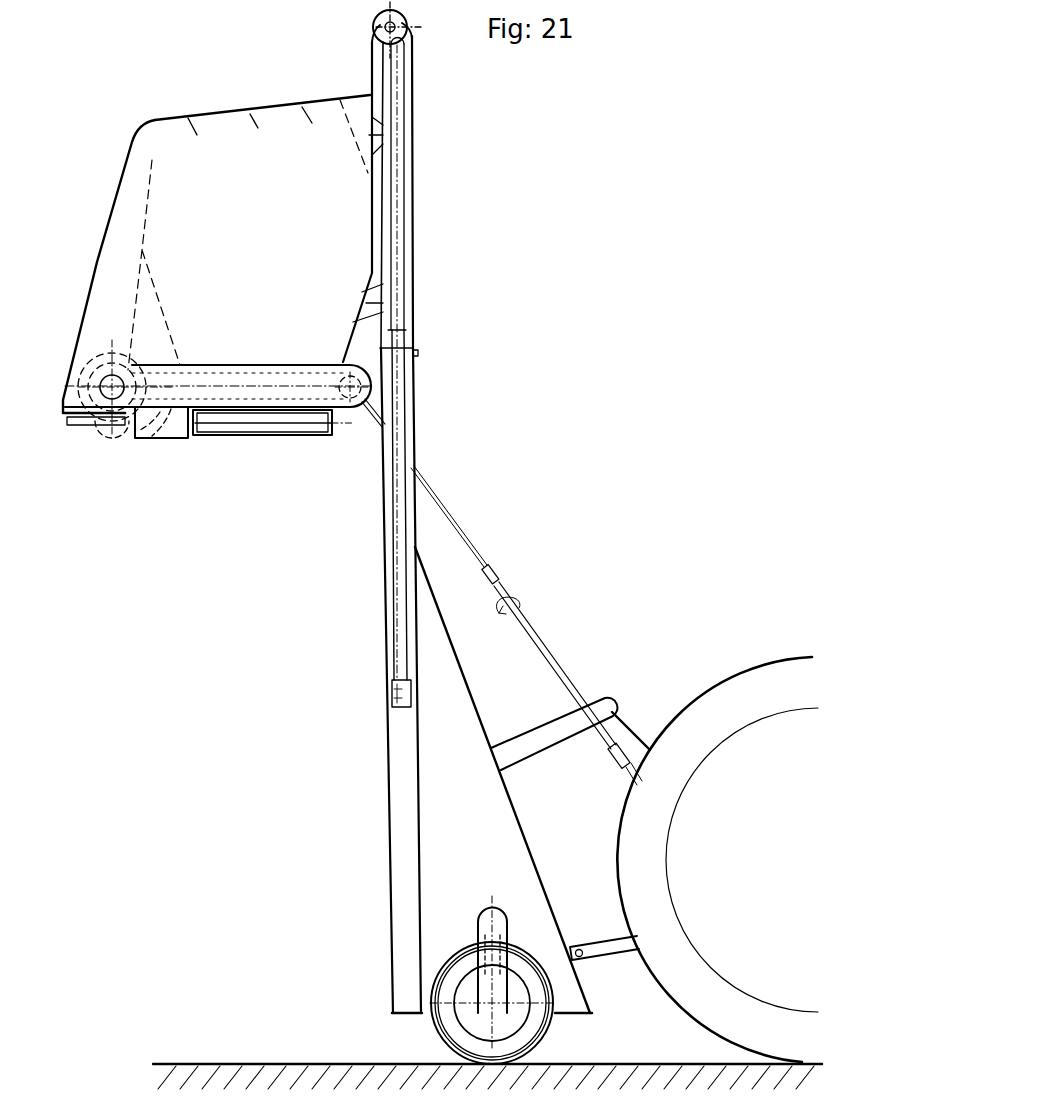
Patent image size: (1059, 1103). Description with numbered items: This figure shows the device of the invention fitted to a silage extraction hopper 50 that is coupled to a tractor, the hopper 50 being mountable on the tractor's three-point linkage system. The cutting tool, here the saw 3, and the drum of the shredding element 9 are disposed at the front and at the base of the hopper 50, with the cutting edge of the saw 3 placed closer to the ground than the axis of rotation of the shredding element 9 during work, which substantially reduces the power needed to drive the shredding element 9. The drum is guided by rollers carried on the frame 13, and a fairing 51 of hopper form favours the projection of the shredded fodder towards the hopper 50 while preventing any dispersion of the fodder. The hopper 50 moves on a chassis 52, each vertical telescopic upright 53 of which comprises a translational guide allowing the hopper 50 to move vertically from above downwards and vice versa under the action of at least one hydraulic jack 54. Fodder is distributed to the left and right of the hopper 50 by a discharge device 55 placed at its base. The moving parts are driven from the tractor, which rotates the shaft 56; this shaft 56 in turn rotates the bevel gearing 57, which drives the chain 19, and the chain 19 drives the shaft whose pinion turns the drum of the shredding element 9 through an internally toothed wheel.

The saw 3 is at (83, 428).
The shredding element 9 is at (105, 430).
The frame 13 is at (233, 122).
The chain 19 is at (250, 378).
The hopper 50 is at (198, 193).
The fairing 51 is at (86, 300).
The chassis 52 is at (477, 862).
The vertical telescopic upright 53 is at (398, 788).
The hydraulic jack 54 is at (398, 543).
The discharge device 55 is at (303, 425).
The shaft 56 is at (556, 690).
The bevel gearing 57 is at (360, 406).